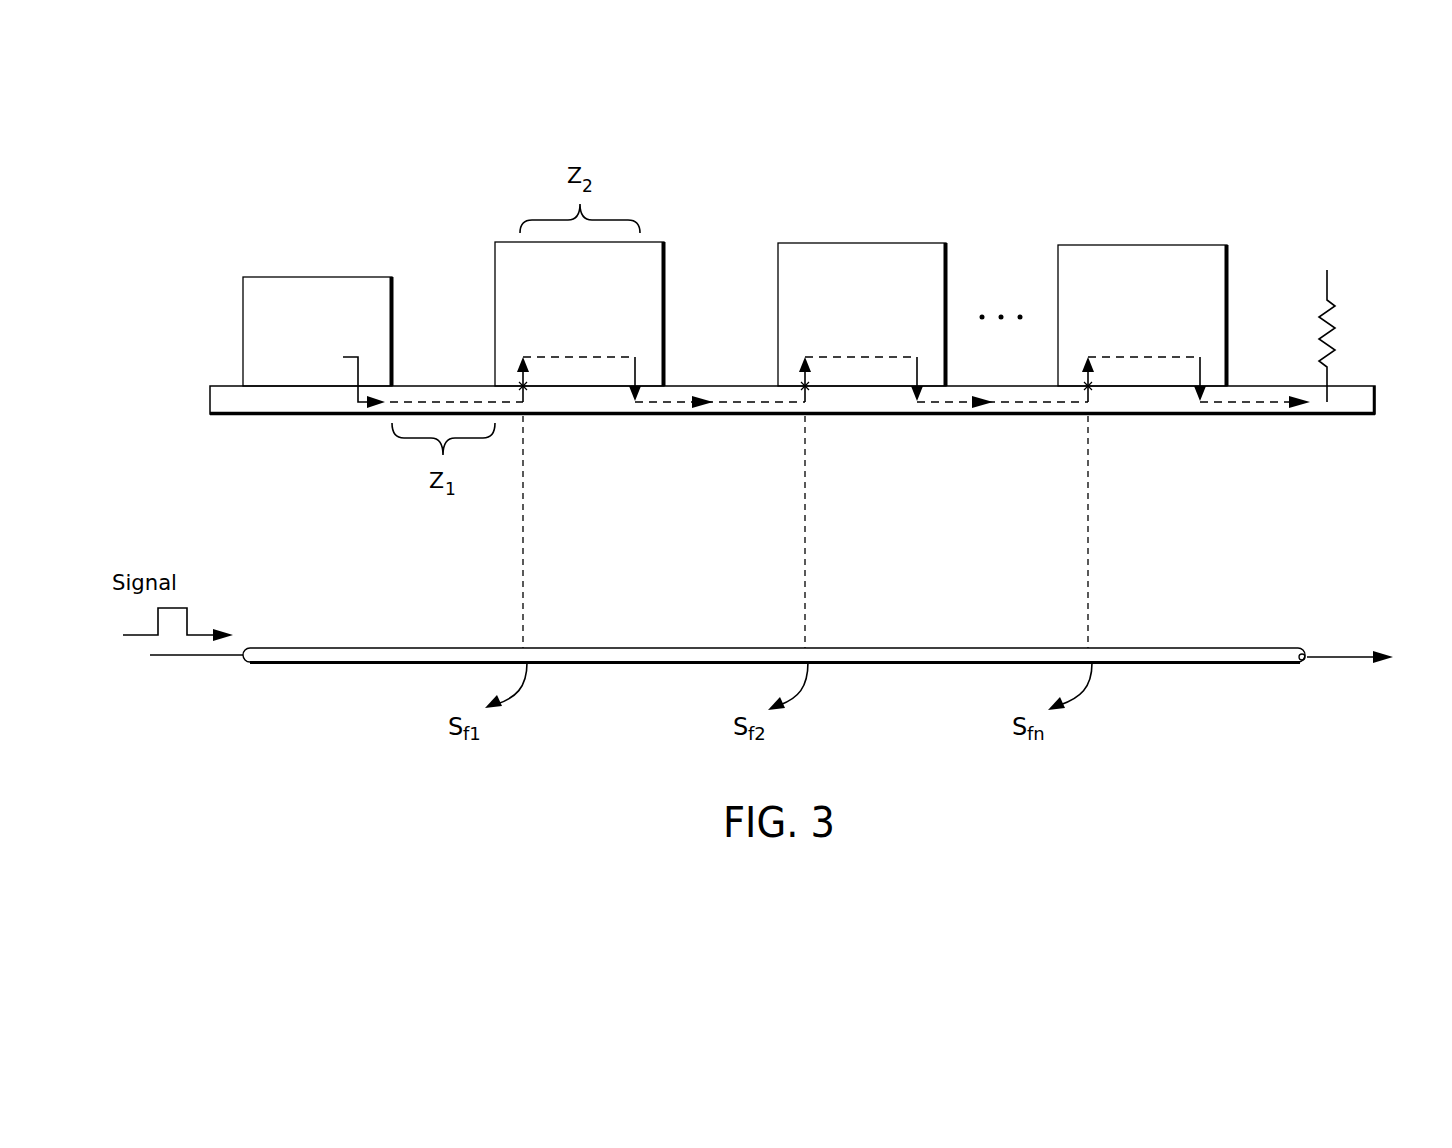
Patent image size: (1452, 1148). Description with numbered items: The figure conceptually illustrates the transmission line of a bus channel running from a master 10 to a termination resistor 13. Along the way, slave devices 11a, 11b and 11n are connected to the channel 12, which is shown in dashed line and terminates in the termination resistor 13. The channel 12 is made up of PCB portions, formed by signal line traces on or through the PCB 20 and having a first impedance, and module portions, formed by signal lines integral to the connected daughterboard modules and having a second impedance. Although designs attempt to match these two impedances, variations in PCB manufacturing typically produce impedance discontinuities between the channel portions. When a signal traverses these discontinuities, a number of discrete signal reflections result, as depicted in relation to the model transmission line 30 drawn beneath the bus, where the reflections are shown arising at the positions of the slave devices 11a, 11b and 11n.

The master 10 is at (332, 349).
The slave device 11a is at (598, 323).
The slave device 11b is at (883, 327).
The slave device 11n is at (1163, 327).
The channel 12 is at (742, 400).
The termination resistor 13 is at (1335, 317).
The PCB 20 is at (1365, 403).
The model transmission line 30 is at (1440, 675).